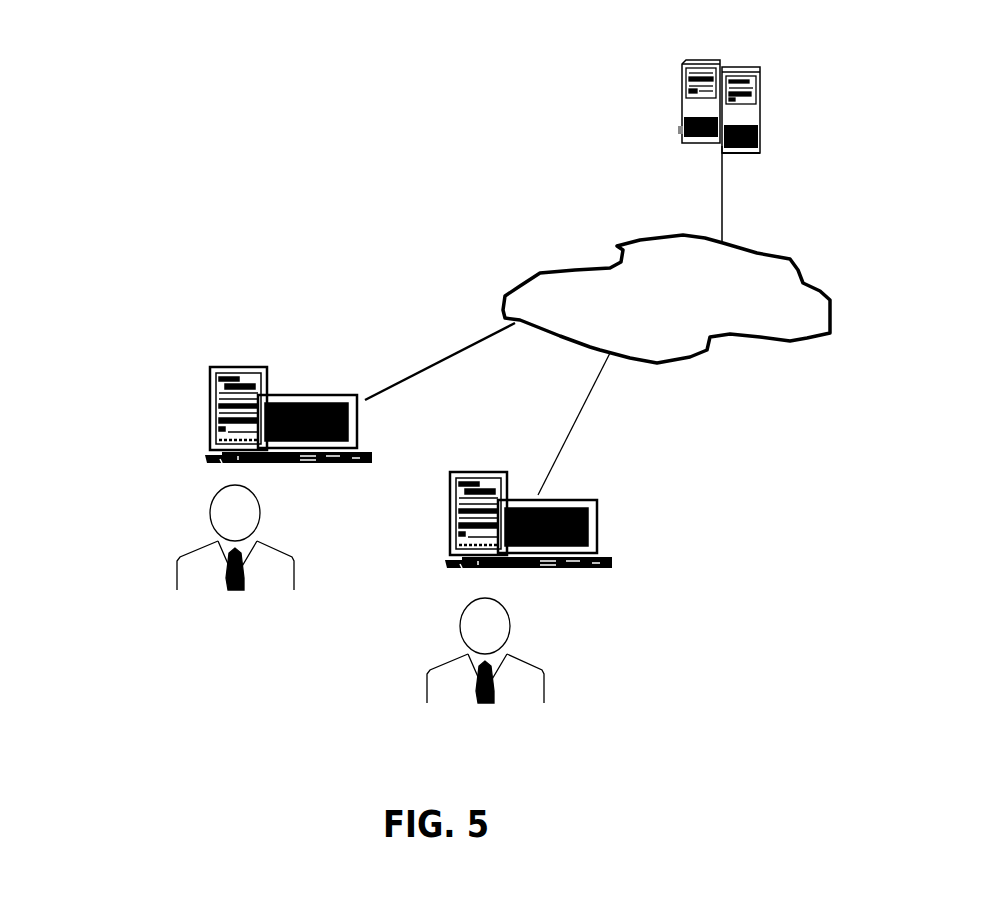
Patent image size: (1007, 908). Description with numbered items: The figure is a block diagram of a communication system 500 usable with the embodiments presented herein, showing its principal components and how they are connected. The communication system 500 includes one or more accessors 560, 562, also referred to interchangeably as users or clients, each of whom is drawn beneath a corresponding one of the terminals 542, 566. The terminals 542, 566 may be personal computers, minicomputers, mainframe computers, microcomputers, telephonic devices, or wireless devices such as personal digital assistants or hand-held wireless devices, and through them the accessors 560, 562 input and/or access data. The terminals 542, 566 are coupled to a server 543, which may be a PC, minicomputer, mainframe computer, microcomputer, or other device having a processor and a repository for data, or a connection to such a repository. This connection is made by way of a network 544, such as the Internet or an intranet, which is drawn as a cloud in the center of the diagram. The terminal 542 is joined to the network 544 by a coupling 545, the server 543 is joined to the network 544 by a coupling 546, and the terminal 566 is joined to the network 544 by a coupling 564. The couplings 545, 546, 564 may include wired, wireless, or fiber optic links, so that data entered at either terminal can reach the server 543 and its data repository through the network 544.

The communication system 500 is at (296, 88).
The terminal 542 is at (218, 380).
The server 543 is at (757, 67).
The network 544 is at (622, 260).
The coupling 545 is at (437, 362).
The coupling 546 is at (722, 192).
The accessor 560 is at (198, 537).
The accessor 562 is at (545, 668).
The coupling 564 is at (577, 421).
The terminal 566 is at (598, 540).